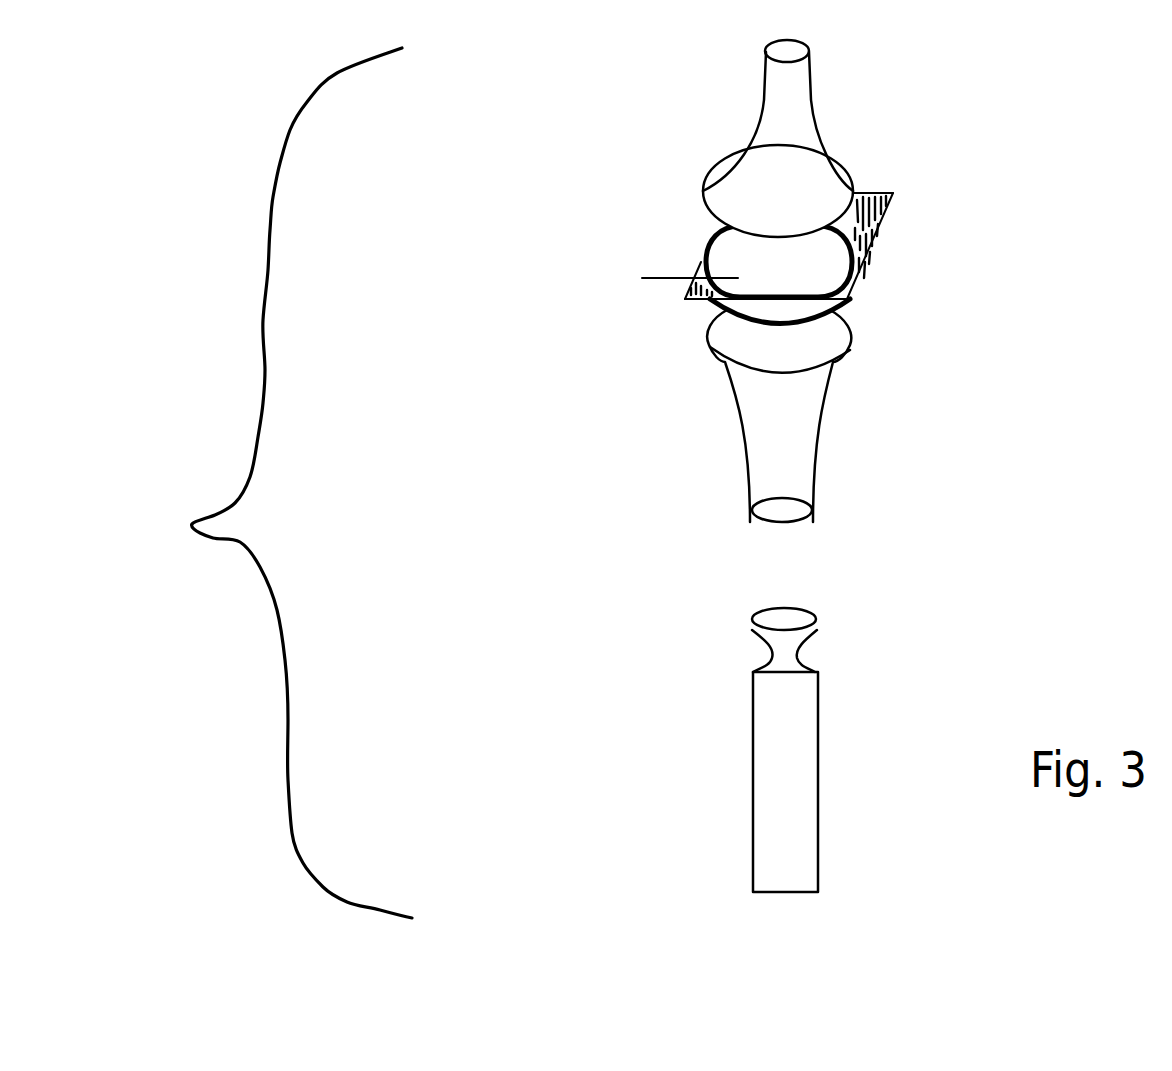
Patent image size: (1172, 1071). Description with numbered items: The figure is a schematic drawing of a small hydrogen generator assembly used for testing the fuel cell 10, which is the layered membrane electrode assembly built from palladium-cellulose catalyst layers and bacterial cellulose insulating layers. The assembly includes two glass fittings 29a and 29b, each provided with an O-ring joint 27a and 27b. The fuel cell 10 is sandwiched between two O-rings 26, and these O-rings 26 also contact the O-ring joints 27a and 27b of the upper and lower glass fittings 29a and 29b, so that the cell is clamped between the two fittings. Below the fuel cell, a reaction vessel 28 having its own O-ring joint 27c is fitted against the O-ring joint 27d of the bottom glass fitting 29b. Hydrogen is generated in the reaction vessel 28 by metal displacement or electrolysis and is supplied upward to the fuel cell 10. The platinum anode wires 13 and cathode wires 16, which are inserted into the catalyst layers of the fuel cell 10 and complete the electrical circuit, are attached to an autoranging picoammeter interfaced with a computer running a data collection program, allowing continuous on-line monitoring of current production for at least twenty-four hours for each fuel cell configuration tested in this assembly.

The fuel cell 10 is at (890, 226).
The anode wires 13 is at (976, 256).
The cathode wires 16 is at (621, 291).
The O-rings 26 is at (866, 283).
The O-ring joint 27a is at (694, 159).
The O-ring joint 27b is at (888, 373).
The O-ring joint 27c is at (849, 521).
The O-ring joint 27d is at (832, 603).
The reaction vessel 28 is at (720, 742).
The glass fitting 29a is at (731, 133).
The glass fitting 29b is at (734, 442).